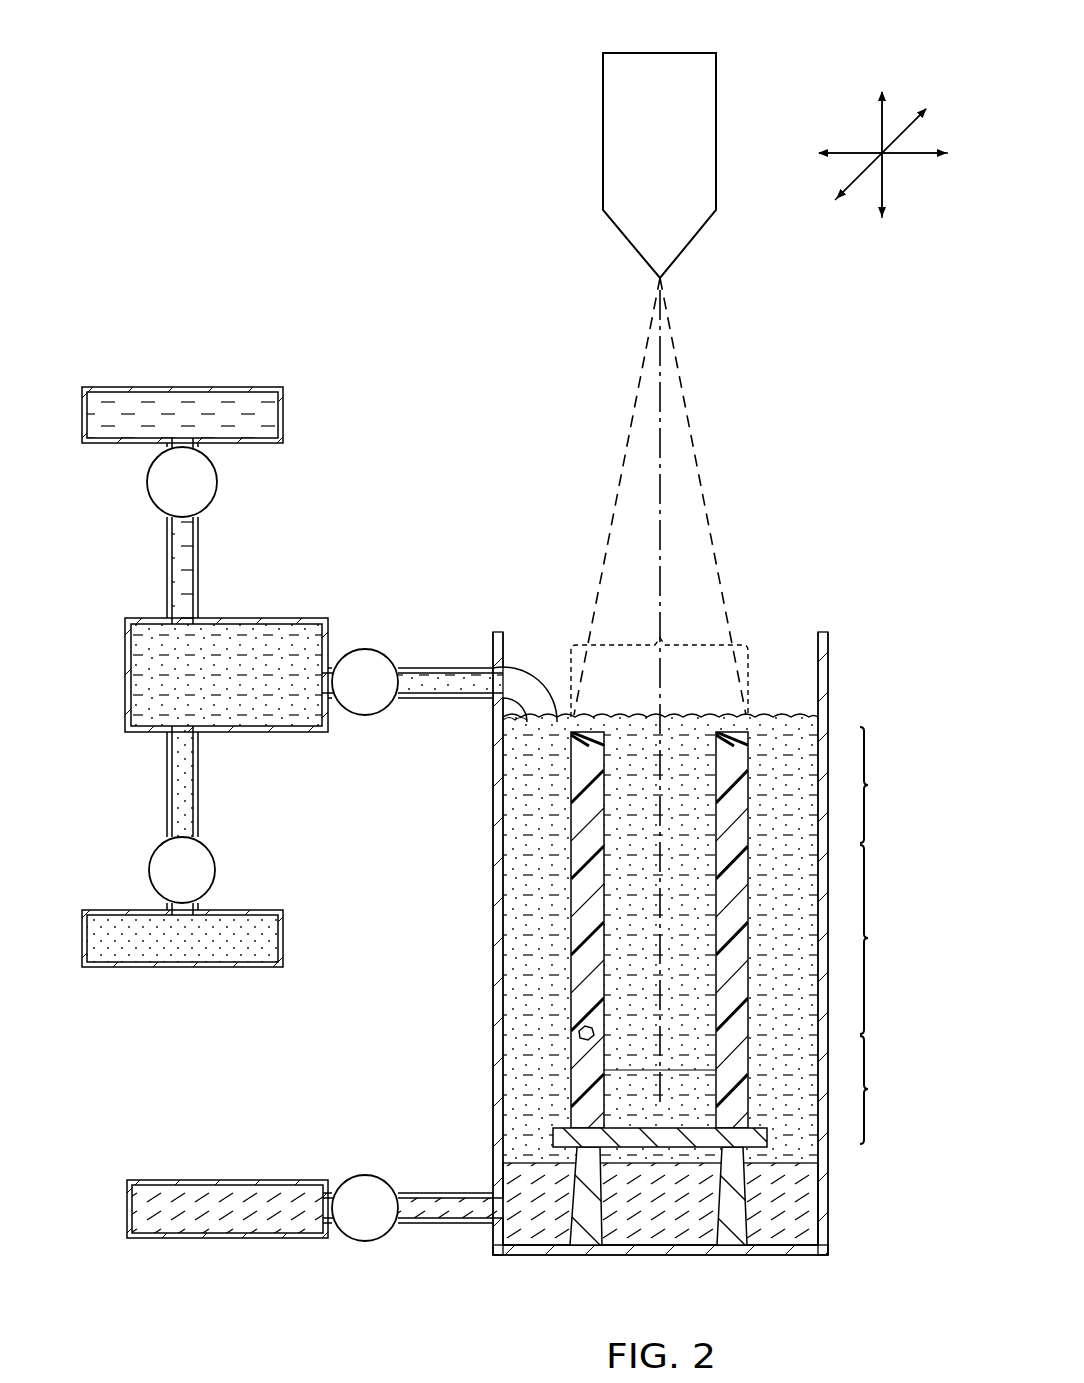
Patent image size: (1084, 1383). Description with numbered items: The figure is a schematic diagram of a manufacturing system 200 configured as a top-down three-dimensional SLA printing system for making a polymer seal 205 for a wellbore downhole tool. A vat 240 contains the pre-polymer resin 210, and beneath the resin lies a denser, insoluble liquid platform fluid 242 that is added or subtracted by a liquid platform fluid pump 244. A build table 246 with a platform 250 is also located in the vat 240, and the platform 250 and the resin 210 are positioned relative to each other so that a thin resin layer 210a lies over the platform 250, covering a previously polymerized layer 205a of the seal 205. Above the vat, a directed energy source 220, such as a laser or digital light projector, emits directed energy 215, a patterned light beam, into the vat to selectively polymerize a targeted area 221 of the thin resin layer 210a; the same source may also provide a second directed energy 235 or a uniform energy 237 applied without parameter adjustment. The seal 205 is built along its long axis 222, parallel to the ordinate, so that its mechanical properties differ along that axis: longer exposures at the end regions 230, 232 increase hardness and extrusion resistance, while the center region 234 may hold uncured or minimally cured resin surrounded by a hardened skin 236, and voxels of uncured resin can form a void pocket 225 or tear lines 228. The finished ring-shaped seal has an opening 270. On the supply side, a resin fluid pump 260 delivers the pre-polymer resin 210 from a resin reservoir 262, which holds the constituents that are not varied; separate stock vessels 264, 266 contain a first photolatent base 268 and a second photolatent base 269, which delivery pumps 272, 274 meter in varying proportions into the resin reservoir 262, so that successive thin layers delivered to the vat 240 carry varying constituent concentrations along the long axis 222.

The manufacturing system 200 is at (268, 56).
The polymer seal 205 is at (550, 915).
The previously polymerized layer 205a is at (755, 738).
The pre-polymer resin 210 is at (290, 630).
The thin resin layer 210a is at (748, 720).
The directed energy 215 is at (604, 496).
The second directed energy 235 is at (604, 496).
The uniform energy 237 is at (632, 412).
The directed energy source 220 is at (603, 130).
The targeted area 221 is at (659, 661).
The long axis 222 is at (665, 452).
The void pocket 225 is at (578, 1032).
The tear lines 228 is at (602, 1068).
The end region 230 is at (889, 785).
The end region 232 is at (889, 1090).
The center region 234 is at (889, 939).
The skin 236 is at (572, 880).
The vat 240 is at (830, 652).
The liquid platform fluid 242 is at (640, 1255).
The liquid platform fluid pump 244 is at (365, 1241).
The build table 246 is at (778, 1135).
The platform 250 is at (553, 1137).
The resin fluid pump 260 is at (362, 715).
The resin reservoir 262 is at (125, 670).
The stock vessel 264 is at (182, 383).
The stock vessel 266 is at (182, 970).
The first photolatent base 268 is at (200, 400).
The second photolatent base 269 is at (205, 962).
The opening 270 is at (634, 738).
The delivery pump 272 is at (147, 482).
The delivery pump 274 is at (147, 870).